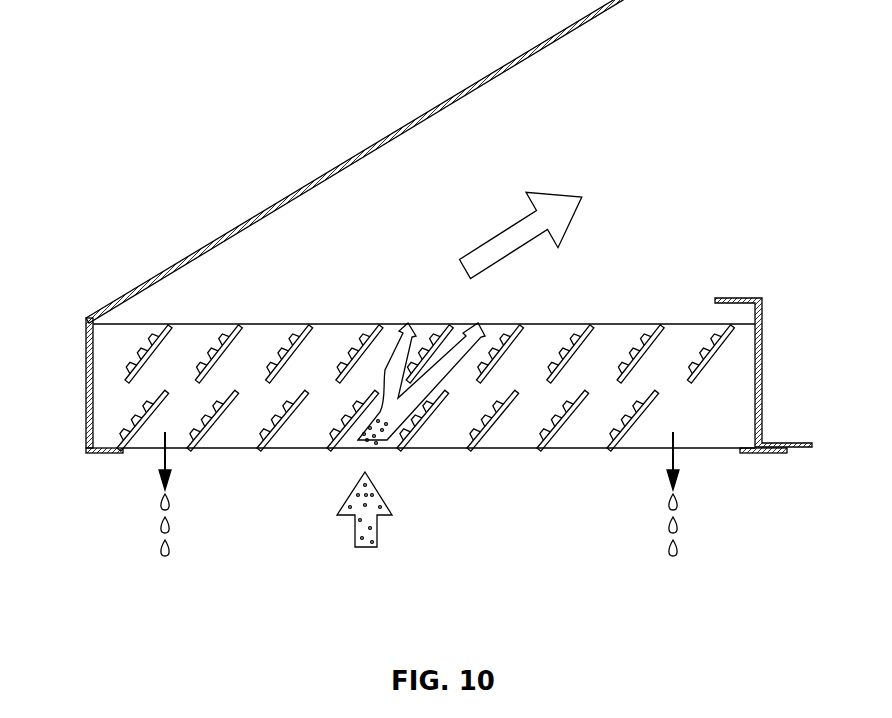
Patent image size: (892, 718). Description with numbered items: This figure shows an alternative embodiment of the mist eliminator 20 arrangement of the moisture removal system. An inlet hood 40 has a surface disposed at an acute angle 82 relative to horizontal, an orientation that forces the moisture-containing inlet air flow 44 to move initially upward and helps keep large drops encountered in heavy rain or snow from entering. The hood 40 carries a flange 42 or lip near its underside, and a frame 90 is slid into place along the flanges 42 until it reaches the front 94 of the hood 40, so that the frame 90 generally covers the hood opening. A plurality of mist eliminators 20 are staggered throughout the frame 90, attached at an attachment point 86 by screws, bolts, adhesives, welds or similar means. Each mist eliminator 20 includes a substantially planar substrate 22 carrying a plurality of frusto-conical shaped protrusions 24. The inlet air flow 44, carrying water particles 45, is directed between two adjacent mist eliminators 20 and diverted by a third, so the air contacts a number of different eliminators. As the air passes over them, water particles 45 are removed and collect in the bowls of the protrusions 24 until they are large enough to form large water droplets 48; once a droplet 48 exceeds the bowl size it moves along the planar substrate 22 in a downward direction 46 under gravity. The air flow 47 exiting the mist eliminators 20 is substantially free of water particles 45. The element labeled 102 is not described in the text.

The mist eliminator 20 is at (423, 381).
The substantially planar substrate 22 is at (517, 338).
The frusto-conical shaped protrusion 24 is at (296, 333).
The inlet hood 40 is at (357, 161).
The flange 42 is at (100, 453).
The inlet air flow 44 is at (378, 530).
The water particles 45 is at (375, 440).
The downward direction 46 is at (170, 455).
The air flow exiting the mist eliminators 47 is at (553, 205).
The large water droplet 48 is at (170, 548).
The acute angle 82 is at (573, 33).
The attachment point 86 is at (166, 326).
The frame 90 is at (765, 355).
The front of the hood 94 is at (86, 388).
The bottom flange of side wall 102 is at (762, 427).